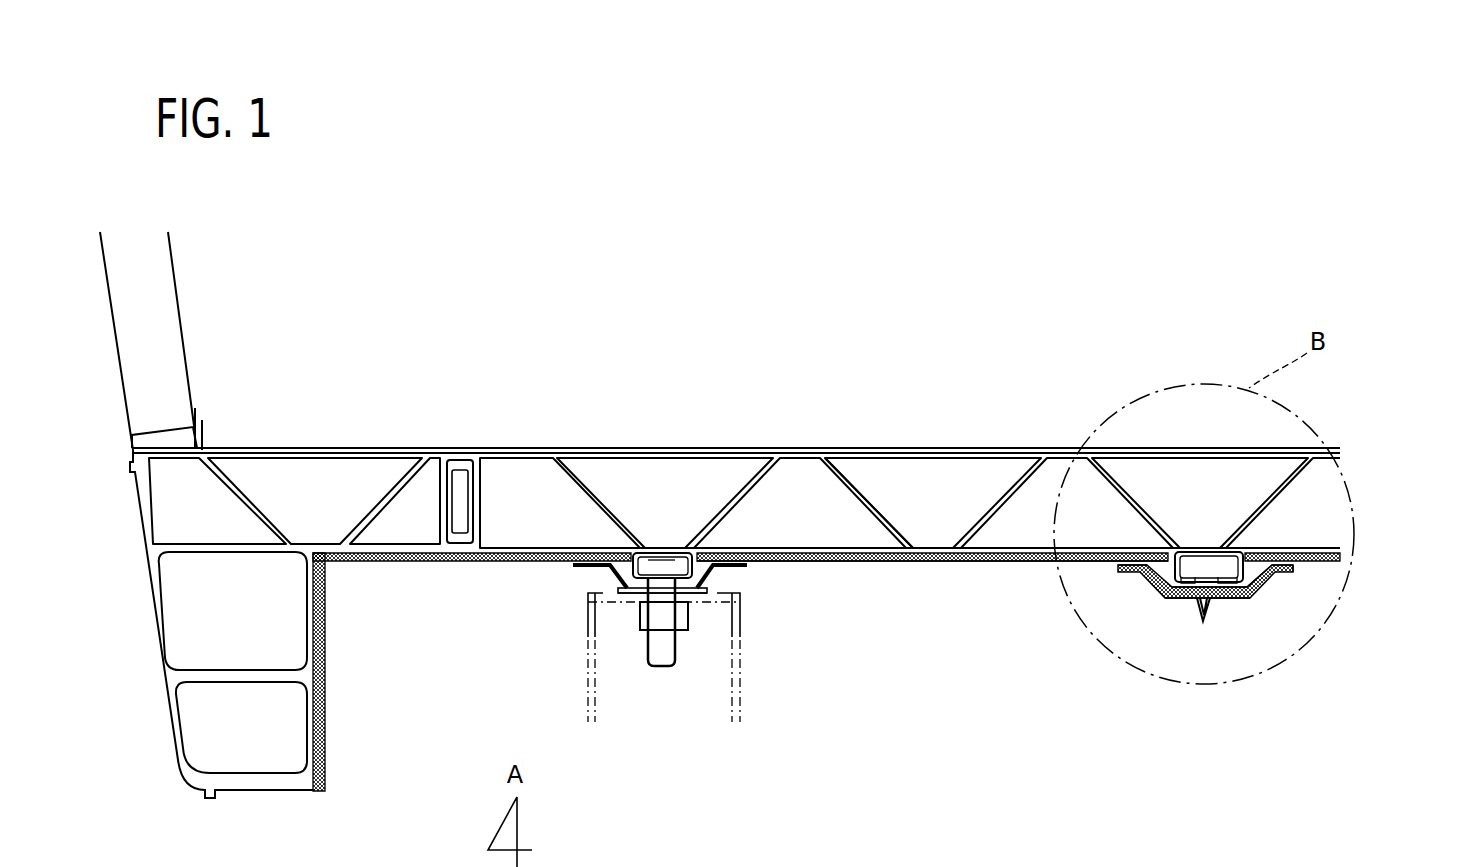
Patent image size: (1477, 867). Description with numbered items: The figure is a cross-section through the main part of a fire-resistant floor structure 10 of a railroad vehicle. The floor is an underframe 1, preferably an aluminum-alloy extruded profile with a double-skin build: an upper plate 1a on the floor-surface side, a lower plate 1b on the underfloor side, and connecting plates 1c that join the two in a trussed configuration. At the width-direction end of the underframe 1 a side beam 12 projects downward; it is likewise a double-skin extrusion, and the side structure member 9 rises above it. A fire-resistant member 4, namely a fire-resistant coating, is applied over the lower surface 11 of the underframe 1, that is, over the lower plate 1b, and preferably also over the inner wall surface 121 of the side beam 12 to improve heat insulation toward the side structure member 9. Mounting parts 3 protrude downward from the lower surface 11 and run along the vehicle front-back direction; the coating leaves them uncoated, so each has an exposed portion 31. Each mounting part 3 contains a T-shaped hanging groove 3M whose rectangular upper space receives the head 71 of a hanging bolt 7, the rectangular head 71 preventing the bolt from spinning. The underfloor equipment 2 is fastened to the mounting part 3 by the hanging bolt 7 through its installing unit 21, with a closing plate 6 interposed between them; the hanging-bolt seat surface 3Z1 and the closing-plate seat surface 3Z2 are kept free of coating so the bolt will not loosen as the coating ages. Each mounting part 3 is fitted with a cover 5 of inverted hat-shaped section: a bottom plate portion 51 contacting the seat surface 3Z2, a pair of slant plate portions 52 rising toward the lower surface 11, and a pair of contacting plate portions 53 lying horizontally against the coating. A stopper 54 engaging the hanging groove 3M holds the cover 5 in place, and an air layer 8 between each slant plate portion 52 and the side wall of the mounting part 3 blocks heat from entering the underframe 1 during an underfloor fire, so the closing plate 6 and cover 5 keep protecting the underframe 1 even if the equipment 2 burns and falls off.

The underframe 1 is at (743, 451).
The upper plate 1a is at (922, 450).
The lower plate 1b is at (797, 548).
The connecting plate 1c is at (858, 483).
The underfloor equipment 2 is at (741, 695).
The installing unit 21 is at (741, 613).
The mounting part 3 is at (634, 584).
The exposed portion 31 is at (617, 571).
The hanging groove 3M is at (652, 560).
The hanging-bolt seat surface 3Z1 is at (672, 565).
The closing-plate seat surface 3Z2 is at (690, 583).
The fire-resistant member 4 is at (453, 561).
The cover 5 is at (713, 569).
The bottom plate portion 51 is at (1223, 599).
The slant plate portion 52 is at (1255, 597).
The contacting plate portion 53 is at (1277, 589).
The stopper 54 is at (1195, 606).
The closing plate 6 is at (693, 606).
The hanging bolt 7 is at (653, 648).
The head 71 is at (645, 579).
The air layer 8 is at (1130, 572).
The side structure member 9 is at (173, 320).
The fire-resistant floor structure 10 is at (1028, 346).
The lower surface 11 is at (855, 562).
The side beam 12 is at (308, 677).
The inner wall surface 121 is at (321, 601).